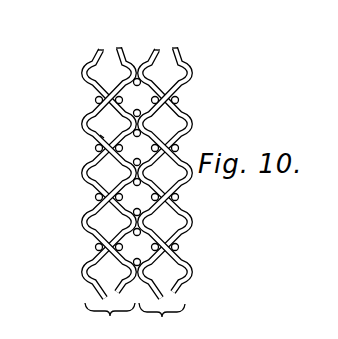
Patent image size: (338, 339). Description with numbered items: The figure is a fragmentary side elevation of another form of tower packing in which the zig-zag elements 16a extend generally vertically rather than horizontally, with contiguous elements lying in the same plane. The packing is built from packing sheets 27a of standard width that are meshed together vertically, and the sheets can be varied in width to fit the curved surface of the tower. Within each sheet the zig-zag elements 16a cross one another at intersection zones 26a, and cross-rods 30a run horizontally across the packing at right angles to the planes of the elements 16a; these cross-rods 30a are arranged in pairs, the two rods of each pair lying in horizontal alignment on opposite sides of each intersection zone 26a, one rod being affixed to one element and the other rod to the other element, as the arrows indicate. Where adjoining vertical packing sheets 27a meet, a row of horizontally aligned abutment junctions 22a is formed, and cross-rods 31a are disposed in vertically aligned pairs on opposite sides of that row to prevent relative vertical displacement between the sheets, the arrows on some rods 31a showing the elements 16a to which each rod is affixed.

The zig-zag element 16a is at (117, 46).
The abutment junction 22a is at (141, 135).
The intersection zone 26a is at (105, 79).
The packing sheet 27a is at (151, 171).
The cross-rod 30a is at (134, 113).
The cross-rod 31a is at (102, 135).